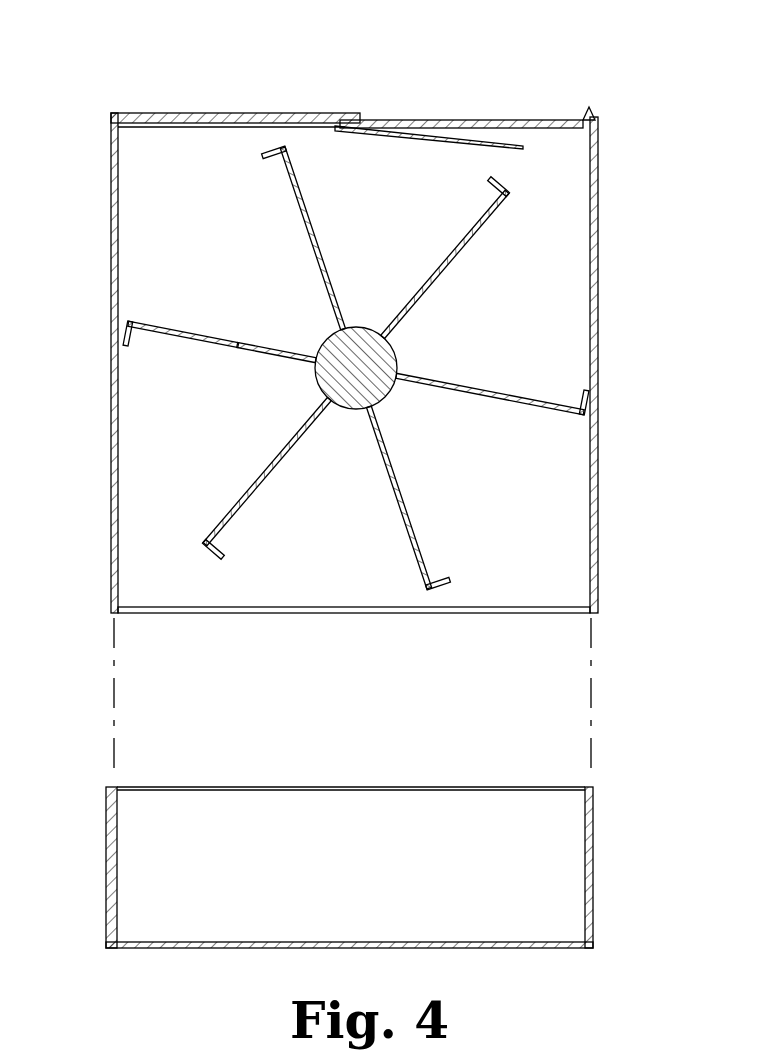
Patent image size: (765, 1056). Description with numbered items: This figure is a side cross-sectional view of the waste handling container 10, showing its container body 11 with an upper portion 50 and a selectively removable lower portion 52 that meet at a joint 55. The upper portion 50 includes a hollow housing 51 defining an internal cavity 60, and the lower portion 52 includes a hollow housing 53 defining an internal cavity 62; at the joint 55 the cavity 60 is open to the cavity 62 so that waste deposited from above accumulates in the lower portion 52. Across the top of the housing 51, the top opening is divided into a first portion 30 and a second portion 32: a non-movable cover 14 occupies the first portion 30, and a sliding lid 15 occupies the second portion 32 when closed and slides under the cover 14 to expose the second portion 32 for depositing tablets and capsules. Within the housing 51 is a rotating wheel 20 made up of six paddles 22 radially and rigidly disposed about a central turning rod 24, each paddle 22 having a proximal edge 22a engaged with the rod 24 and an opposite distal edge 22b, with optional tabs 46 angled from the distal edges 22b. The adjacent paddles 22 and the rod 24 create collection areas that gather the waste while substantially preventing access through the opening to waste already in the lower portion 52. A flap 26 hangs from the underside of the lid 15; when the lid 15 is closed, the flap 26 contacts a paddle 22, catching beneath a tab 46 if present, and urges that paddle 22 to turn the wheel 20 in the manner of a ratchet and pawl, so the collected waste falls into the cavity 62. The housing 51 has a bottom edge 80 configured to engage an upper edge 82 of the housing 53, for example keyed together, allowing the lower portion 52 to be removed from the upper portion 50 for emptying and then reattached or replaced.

The container 10 is at (703, 162).
The container body 11 is at (683, 435).
The non-movable cover 14 is at (160, 113).
The sliding lid 15 is at (425, 119).
The rotating wheel 20 is at (481, 317).
The paddles 22 is at (490, 398).
The proximal edge 22a is at (314, 358).
The distal edge 22b is at (130, 320).
The central turning rod 24 is at (398, 350).
The flap 26 is at (445, 147).
The first portion of opening 30 is at (253, 84).
The second portion of opening 32 is at (521, 95).
The tabs 46 is at (582, 392).
The upper portion 50 is at (650, 566).
The housing of upper portion 51 is at (600, 532).
The lower portion 52 is at (648, 868).
The housing of lower portion 53 is at (595, 820).
The joint 55 is at (553, 614).
The internal cavity of upper portion 60 is at (313, 576).
The internal cavity of lower portion 62 is at (228, 807).
The bottom edge 80 is at (162, 613).
The upper edge 82 is at (141, 787).